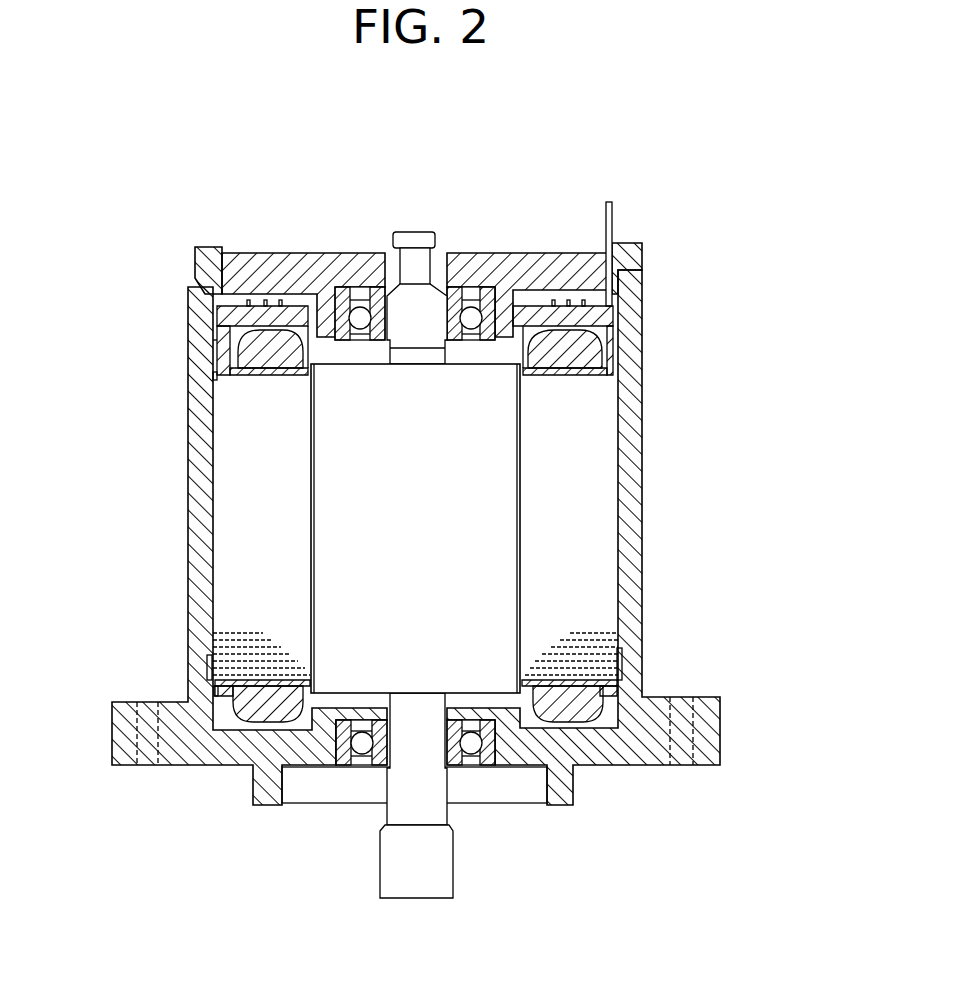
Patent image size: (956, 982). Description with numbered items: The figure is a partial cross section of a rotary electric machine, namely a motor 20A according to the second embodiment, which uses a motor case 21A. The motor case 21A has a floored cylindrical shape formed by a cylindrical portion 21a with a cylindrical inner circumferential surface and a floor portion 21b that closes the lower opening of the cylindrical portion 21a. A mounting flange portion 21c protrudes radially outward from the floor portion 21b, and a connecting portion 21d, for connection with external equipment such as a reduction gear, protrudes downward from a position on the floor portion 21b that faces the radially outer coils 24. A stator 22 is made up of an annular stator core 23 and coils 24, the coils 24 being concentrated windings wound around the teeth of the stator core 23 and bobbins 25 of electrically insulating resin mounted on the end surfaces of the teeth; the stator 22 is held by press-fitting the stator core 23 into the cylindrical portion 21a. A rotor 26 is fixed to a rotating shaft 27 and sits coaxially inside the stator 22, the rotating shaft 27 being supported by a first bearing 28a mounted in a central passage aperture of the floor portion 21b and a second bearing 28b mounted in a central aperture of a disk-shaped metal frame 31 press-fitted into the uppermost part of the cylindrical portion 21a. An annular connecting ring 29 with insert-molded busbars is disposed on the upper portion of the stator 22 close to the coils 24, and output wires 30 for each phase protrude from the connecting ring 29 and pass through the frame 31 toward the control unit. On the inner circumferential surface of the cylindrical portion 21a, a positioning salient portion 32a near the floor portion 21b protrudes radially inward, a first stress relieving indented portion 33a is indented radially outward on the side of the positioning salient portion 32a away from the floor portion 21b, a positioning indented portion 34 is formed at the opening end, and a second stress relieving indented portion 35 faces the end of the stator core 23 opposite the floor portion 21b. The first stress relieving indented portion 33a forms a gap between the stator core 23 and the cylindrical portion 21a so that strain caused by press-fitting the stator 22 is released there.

The motor 20A is at (183, 163).
The motor case 21A is at (445, 570).
The cylindrical portion 21a is at (640, 557).
The floor portion 21b is at (240, 750).
The mounting flange portion 21c is at (150, 750).
The connecting portion 21d is at (560, 770).
The stator 22 is at (491, 456).
The stator core 23 is at (593, 398).
The coils 24 is at (610, 350).
The bobbins 25 is at (213, 355).
The rotor 26 is at (497, 467).
The rotating shaft 27 is at (440, 810).
The first bearing 28a is at (348, 767).
The second bearing 28b is at (353, 290).
The connecting ring 29 is at (542, 306).
The output wires 30 is at (617, 223).
The frame 31 is at (488, 262).
The positioning salient portion 32a is at (214, 690).
The first stress relieving indented portion 33a is at (208, 656).
The positioning indented portion 34 is at (213, 292).
The second stress relieving indented portion 35 is at (212, 376).